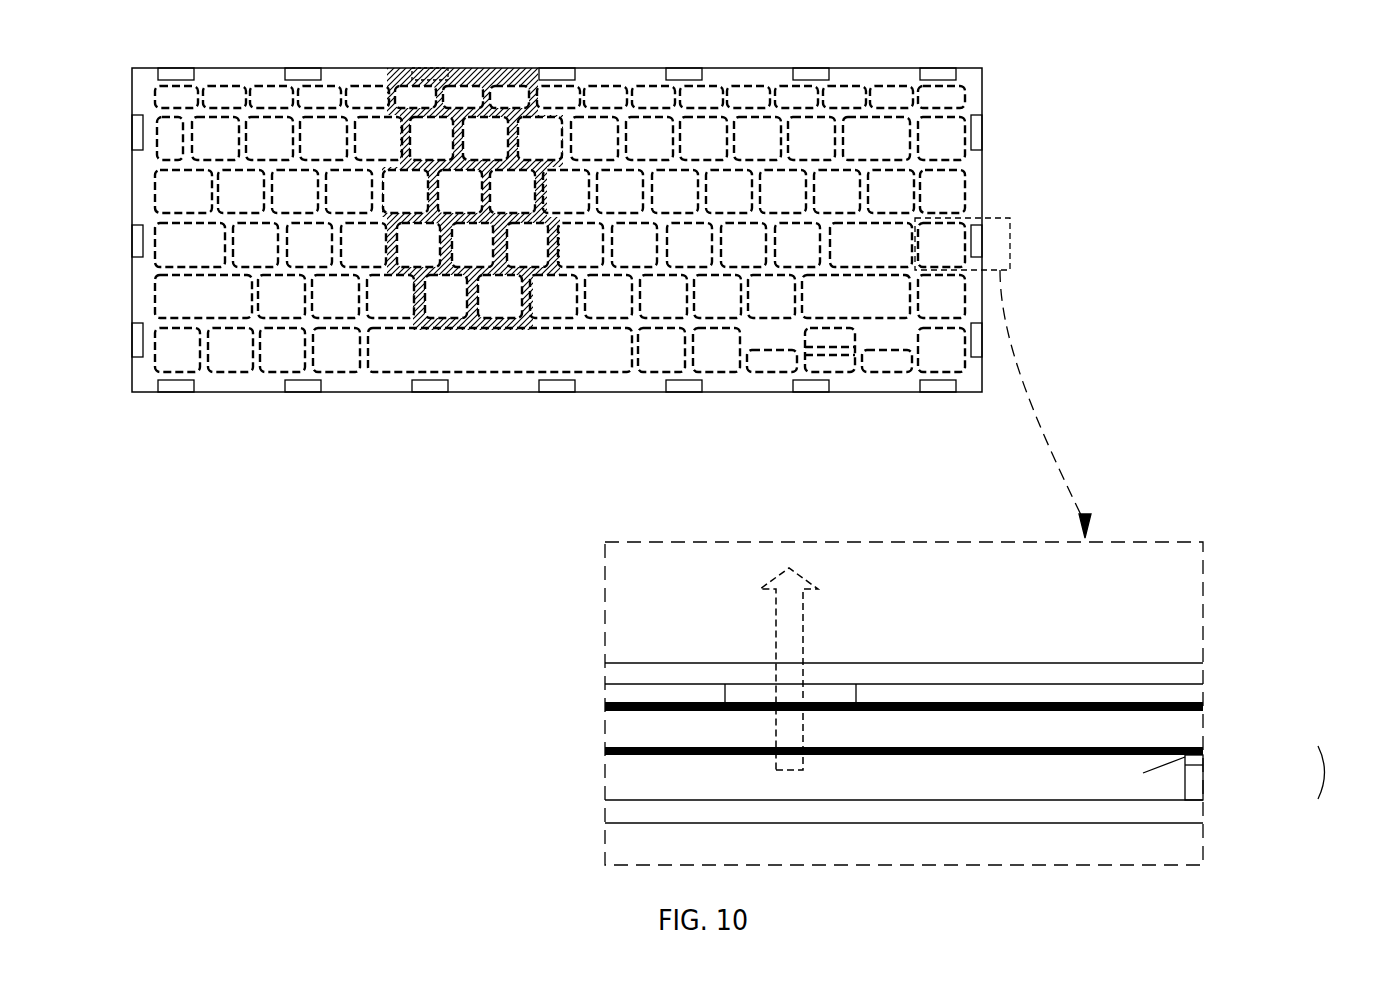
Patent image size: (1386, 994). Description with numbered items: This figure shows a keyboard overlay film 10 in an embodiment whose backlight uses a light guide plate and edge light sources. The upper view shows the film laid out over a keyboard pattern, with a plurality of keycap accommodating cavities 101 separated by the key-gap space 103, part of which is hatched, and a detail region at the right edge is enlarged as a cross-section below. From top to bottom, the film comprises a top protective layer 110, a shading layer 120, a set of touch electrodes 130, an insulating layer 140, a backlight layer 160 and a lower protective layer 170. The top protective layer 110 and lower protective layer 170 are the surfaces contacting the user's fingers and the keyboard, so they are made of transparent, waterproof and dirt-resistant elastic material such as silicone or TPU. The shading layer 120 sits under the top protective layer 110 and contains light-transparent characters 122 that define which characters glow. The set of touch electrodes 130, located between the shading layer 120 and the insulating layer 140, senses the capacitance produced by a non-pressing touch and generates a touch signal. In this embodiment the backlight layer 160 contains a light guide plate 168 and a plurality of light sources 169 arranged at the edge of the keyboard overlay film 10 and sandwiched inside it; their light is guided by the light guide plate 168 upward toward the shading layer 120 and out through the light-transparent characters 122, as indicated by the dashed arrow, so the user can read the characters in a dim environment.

The keyboard overlay film 10 is at (963, 68).
The keycap accommodating cavity 101 is at (170, 242).
The key-gap space 103 is at (414, 328).
The top protective layer 110 is at (1183, 673).
The shading layer 120 is at (1183, 693).
The light-transparent characters 122 is at (725, 697).
The set of touch electrodes 130 is at (605, 706).
The insulating layer 140 is at (1183, 727).
The backlight layer 160 is at (1344, 772).
The light guide plate 168 is at (625, 780).
The light sources 169 is at (809, 72).
The lower protective layer 170 is at (1183, 810).